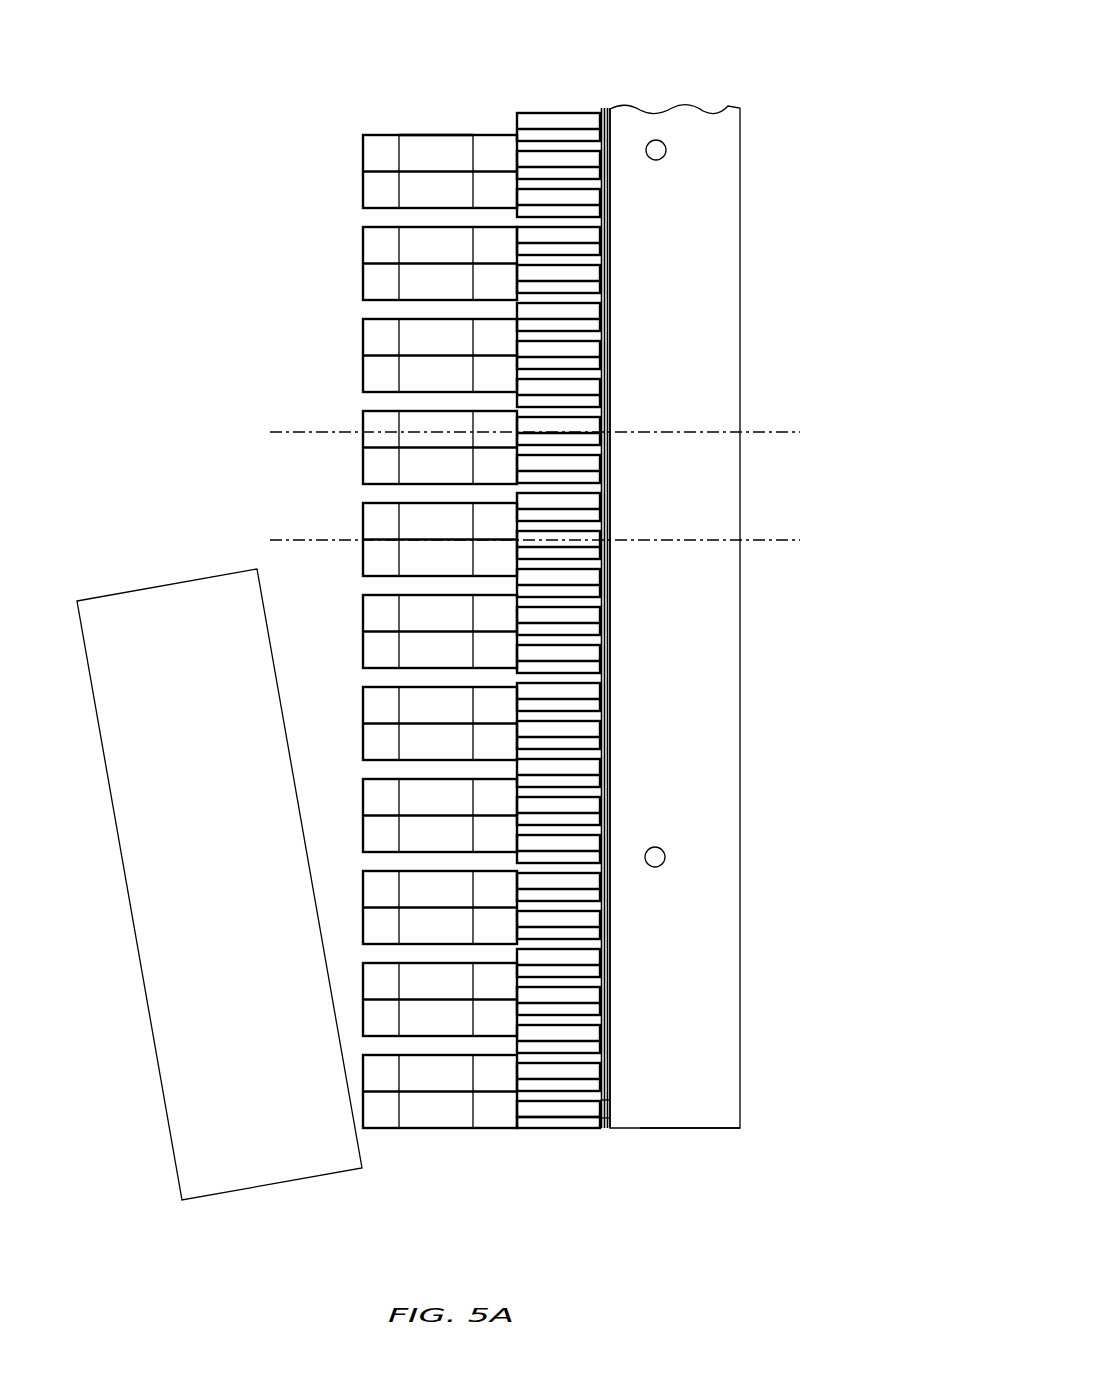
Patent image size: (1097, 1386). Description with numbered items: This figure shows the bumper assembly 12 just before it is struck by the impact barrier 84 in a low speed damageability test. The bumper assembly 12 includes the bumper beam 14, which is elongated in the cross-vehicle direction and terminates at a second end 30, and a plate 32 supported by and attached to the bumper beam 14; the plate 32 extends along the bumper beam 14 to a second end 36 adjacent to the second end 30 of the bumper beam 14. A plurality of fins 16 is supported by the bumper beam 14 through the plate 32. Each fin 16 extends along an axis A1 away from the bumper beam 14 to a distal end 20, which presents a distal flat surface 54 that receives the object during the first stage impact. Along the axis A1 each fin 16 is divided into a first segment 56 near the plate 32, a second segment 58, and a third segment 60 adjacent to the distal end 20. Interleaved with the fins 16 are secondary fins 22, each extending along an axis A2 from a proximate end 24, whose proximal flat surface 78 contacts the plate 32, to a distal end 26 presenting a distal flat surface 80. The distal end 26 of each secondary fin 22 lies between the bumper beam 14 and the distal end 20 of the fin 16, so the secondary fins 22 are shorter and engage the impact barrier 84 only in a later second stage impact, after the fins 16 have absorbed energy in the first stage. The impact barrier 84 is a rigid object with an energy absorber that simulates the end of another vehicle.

The bumper assembly 12 is at (535, 600).
The bumper beam 14 is at (715, 645).
The fin 16 is at (384, 599).
The distal end 20 is at (402, 139).
The secondary fin 22 is at (554, 634).
The proximate end 24 is at (608, 1119).
The distal end 26 is at (517, 1106).
The second end 30 is at (719, 1130).
The plate 32 is at (625, 616).
The second end 36 is at (603, 1130).
The distal flat surface 54 is at (363, 183).
The first segment 56 is at (495, 131).
The second segment 58 is at (435, 131).
The third segment 60 is at (383, 131).
The proximal flat surface 78 is at (592, 1102).
The distal flat surface 80 is at (517, 1120).
The impact barrier 84 is at (143, 592).
The axis A1 is at (535, 540).
The axis A2 is at (535, 432).